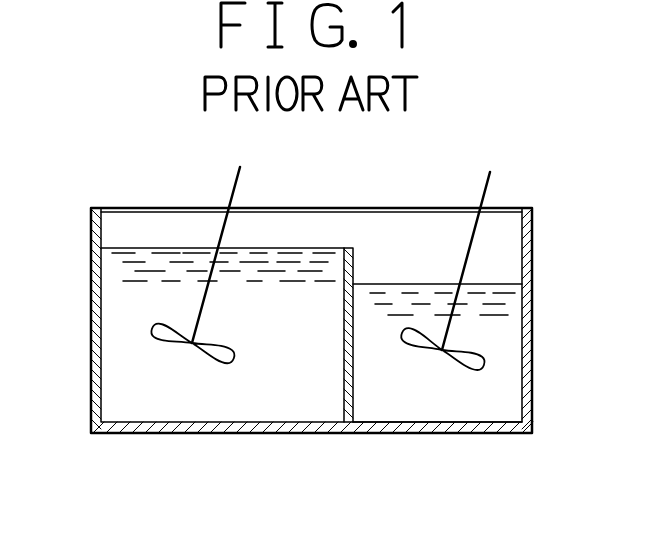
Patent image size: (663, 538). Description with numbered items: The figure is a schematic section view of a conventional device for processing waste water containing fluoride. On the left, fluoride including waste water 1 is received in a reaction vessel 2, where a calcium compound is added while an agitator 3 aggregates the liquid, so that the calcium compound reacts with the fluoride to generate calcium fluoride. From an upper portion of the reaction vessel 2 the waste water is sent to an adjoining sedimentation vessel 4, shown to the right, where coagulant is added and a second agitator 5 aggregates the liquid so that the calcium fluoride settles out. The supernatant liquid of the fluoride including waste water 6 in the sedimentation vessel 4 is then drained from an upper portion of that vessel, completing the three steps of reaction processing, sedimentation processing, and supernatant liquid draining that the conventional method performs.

The fluoride including waste water 1 is at (216, 414).
The reaction vessel 2 is at (93, 345).
The agitator 3 is at (188, 342).
The sedimentation vessel 4 is at (532, 360).
The agitator 5 is at (477, 353).
The fluoride including waste water 6 is at (512, 410).